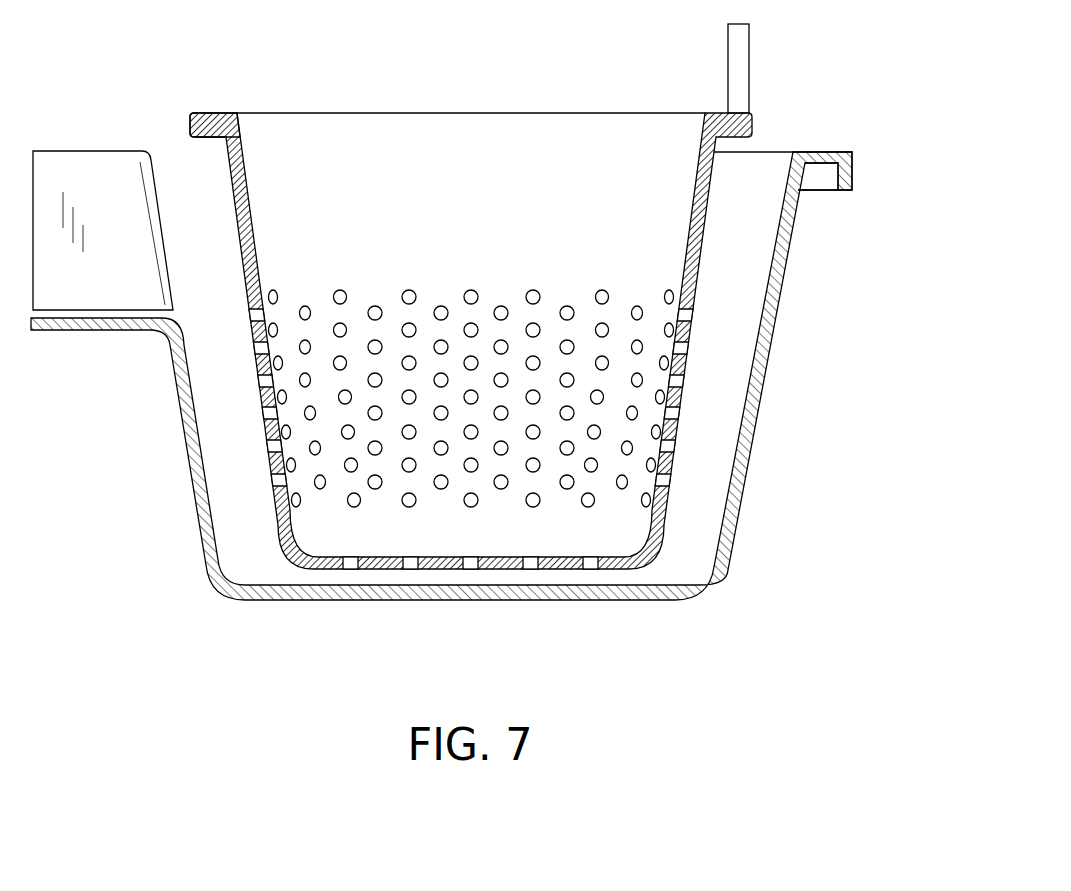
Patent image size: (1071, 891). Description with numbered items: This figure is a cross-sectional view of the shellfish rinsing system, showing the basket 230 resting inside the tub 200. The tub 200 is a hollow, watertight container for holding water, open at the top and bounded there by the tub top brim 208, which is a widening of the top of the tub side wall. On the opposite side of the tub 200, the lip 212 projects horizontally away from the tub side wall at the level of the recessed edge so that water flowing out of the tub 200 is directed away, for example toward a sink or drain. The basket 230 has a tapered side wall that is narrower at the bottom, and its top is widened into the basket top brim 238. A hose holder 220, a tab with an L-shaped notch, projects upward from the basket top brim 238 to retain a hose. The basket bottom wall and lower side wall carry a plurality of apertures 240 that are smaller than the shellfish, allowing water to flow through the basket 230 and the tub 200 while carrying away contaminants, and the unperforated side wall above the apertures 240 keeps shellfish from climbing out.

The tub 200 is at (213, 577).
The tub top brim 208 is at (847, 154).
The lip 212 is at (98, 331).
The hose holder 220 is at (745, 47).
The basket 230 is at (278, 528).
The basket top brim 238 is at (218, 113).
The plurality of apertures 240 is at (644, 381).